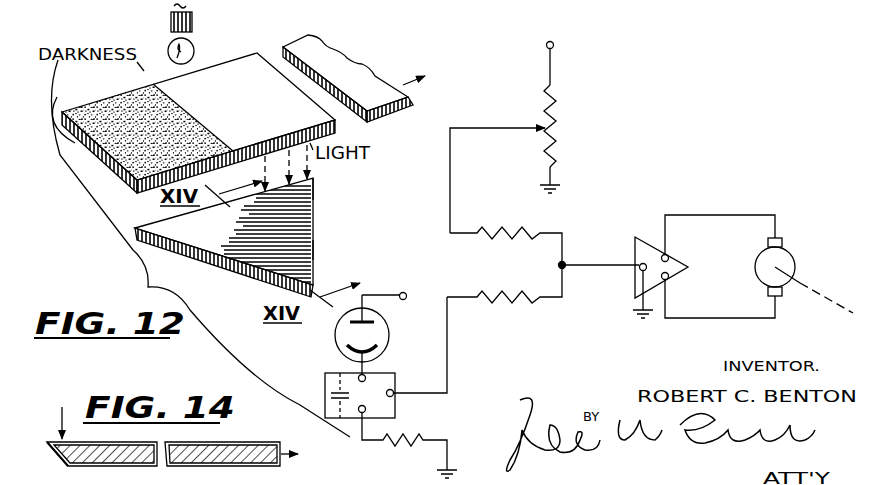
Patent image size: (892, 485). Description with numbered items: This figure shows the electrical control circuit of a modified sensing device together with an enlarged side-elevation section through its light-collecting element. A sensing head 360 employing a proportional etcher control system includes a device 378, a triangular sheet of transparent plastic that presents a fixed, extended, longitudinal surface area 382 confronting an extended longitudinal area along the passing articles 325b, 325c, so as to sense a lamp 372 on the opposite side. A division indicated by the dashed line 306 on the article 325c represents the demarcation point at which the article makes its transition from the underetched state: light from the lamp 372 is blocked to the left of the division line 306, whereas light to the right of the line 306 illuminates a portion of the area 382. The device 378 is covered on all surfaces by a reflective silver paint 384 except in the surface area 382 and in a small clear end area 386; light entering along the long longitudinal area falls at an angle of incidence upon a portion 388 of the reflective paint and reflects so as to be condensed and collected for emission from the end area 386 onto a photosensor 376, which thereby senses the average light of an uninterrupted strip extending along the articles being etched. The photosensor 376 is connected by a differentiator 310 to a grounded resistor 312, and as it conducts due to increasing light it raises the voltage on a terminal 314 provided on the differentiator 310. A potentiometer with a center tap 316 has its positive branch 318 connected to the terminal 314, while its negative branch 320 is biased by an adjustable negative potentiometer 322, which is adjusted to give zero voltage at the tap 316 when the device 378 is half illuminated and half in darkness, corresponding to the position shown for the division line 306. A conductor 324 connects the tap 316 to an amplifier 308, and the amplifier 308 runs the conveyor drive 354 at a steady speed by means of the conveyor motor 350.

In FIG. 12, the division line 306 is at (143, 70).
In FIG. 12, the lamp 372 is at (193, 53).
In FIG. 12, the record member slab 325b is at (403, 105).
In FIG. 12, the article 325c is at (318, 137).
In FIG. 12, the sensing head 360 is at (323, 215).
In FIG. 12, the surface area 382 is at (313, 183).
In FIG. 14, the surface area 382 is at (72, 436).
In FIG. 12, the device 378 is at (313, 248).
In FIG. 14, the device 378 is at (131, 440).
In FIG. 12, the adjustable negative potentiometer 322 is at (556, 130).
In FIG. 12, the negative branch 320 is at (492, 232).
In FIG. 12, the positive branch 318 is at (518, 296).
In FIG. 12, the center tap 316 is at (559, 265).
In FIG. 12, the conductor 324 is at (595, 262).
In FIG. 12, the amplifier 308 is at (645, 250).
In FIG. 12, the conveyor motor 350 is at (787, 257).
In FIG. 12, the conveyor drive 354 is at (821, 297).
In FIG. 12, the photosensor 376 is at (387, 342).
In FIG. 12, the differentiator 310 is at (328, 386).
In FIG. 12, the terminal 314 is at (394, 391).
In FIG. 12, the grounded resistor 312 is at (390, 433).
In FIG. 14, the reflective silver paint 384 is at (256, 442).
In FIG. 14, the end area 386 is at (308, 464).
In FIG. 14, the portion of reflective paint 388 is at (68, 466).